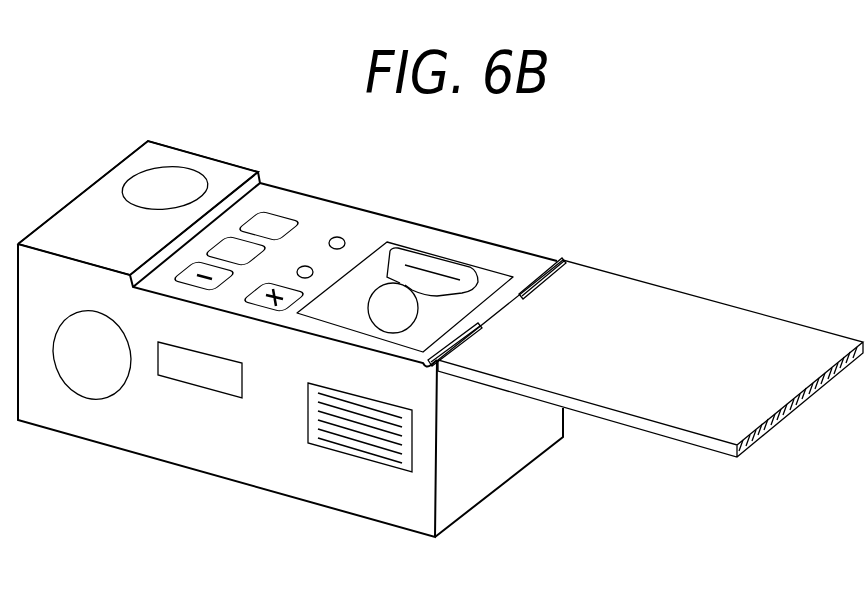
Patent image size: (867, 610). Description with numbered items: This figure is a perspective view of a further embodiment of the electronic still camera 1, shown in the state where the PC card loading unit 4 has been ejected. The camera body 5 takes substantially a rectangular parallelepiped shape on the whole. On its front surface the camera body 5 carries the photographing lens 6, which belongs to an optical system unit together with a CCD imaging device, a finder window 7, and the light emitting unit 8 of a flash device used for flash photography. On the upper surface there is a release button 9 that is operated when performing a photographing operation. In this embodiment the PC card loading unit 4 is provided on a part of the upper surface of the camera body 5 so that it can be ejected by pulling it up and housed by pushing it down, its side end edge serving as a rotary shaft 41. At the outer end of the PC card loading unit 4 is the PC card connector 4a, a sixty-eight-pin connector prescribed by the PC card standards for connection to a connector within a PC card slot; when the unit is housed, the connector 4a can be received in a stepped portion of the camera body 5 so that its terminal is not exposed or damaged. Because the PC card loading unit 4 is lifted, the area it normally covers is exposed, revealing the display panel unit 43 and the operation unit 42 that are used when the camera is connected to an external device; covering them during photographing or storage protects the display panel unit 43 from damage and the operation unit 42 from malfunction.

The electronic still camera 1 is at (505, 170).
The PC card loading unit 4 is at (707, 307).
The PC card connector 4a is at (797, 415).
The camera body 5 is at (90, 200).
The photographing lens 6 is at (80, 382).
The finder window 7 is at (178, 375).
The light emitting unit 8 is at (338, 447).
The release button 9 is at (165, 173).
The rotary shaft 41 is at (557, 256).
The operation unit 42 is at (283, 222).
The display panel unit 43 is at (427, 258).